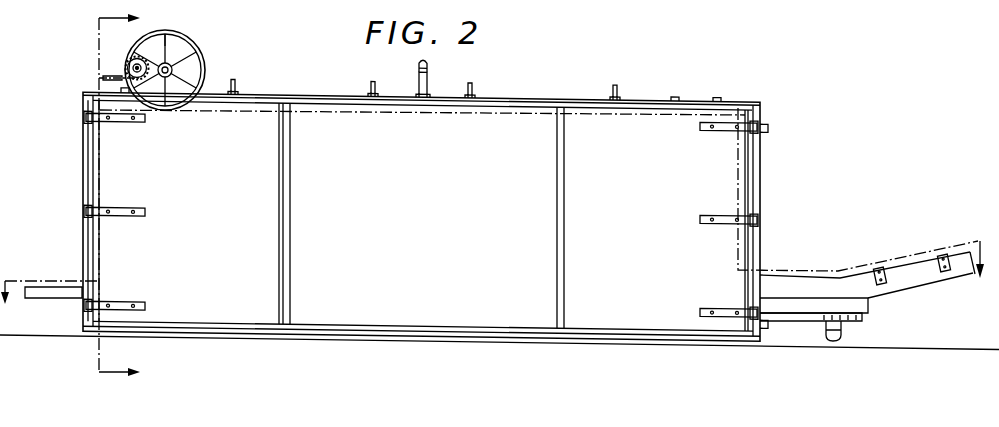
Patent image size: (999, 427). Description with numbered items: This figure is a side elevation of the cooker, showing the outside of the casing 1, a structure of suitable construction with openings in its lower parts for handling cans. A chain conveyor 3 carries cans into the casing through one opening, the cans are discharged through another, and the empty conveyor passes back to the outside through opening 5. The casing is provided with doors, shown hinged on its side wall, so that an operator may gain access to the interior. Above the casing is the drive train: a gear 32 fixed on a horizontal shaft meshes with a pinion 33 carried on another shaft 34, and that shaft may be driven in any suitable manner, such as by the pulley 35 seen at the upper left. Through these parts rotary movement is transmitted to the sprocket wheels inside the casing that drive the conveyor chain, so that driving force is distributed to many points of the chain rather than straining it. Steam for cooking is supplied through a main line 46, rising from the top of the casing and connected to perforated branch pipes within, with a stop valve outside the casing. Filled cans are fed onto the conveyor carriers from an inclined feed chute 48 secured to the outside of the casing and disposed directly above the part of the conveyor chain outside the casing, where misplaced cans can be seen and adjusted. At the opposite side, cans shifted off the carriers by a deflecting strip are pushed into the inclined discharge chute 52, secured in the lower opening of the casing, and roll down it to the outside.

The casing 1 is at (447, 312).
The chain conveyor 3 is at (862, 318).
The opening 5 is at (495, 219).
The gear 32 is at (127, 52).
The pinion 33 is at (188, 36).
The shaft 34 is at (172, 66).
The pulley 35 is at (203, 62).
The main line 46 is at (429, 86).
The inclined feed chute 48 is at (912, 283).
The inclined discharge chute 52 is at (50, 290).